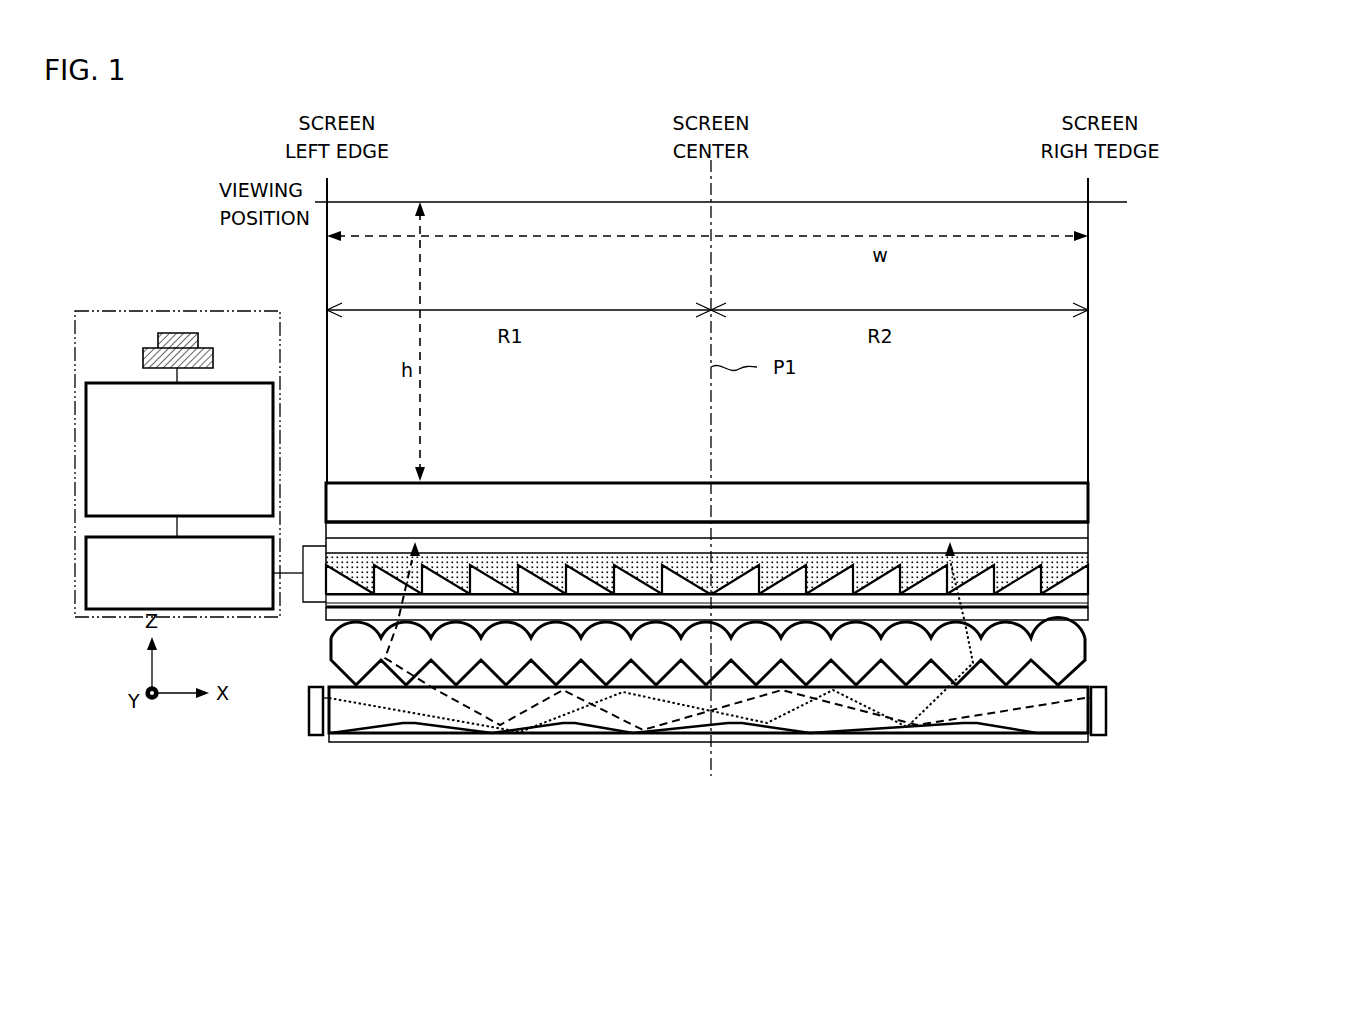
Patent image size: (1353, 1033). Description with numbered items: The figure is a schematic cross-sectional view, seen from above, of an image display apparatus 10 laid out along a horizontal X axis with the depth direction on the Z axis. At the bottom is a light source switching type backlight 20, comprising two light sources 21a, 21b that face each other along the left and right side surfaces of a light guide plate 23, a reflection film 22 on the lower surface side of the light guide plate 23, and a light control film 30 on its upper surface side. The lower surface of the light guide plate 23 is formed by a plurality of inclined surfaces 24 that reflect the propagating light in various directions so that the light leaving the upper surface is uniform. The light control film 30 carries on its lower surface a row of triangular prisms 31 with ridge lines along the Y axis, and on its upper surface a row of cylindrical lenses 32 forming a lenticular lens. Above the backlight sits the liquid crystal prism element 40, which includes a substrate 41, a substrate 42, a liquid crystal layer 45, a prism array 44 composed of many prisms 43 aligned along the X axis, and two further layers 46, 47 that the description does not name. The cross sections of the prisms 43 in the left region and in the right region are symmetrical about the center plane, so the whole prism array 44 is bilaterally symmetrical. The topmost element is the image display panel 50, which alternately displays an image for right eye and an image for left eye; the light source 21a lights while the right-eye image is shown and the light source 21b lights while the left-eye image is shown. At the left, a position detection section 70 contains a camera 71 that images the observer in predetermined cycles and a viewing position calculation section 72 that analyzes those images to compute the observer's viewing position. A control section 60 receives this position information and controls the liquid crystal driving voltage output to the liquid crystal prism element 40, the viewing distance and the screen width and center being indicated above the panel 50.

The image display apparatus 10 is at (1192, 177).
The light source switching type backlight 20 is at (784, 729).
The light source 21a is at (317, 728).
The light source 21b is at (1098, 737).
The reflection film 22 is at (895, 742).
The light guide plate 23 is at (1058, 725).
The inclined surfaces 24 is at (398, 730).
The light control film 30 is at (779, 655).
The prisms 31 is at (1070, 668).
The cylindrical lenses 32 is at (1070, 632).
The liquid crystal prism element 40 is at (800, 538).
The substrate 41 is at (1088, 530).
The substrate 42 is at (1088, 600).
The prisms 43 is at (1088, 565).
The prism array 44 is at (774, 568).
The liquid crystal layer 45 is at (1088, 545).
The polarizing plate 46 is at (1088, 522).
The polarizing plate 47 is at (755, 613).
The image display panel 50 is at (1088, 501).
The control section 60 is at (179, 573).
The position detection section 70 is at (100, 311).
The camera 71 is at (202, 348).
The viewing position calculation section 72 is at (179, 449).